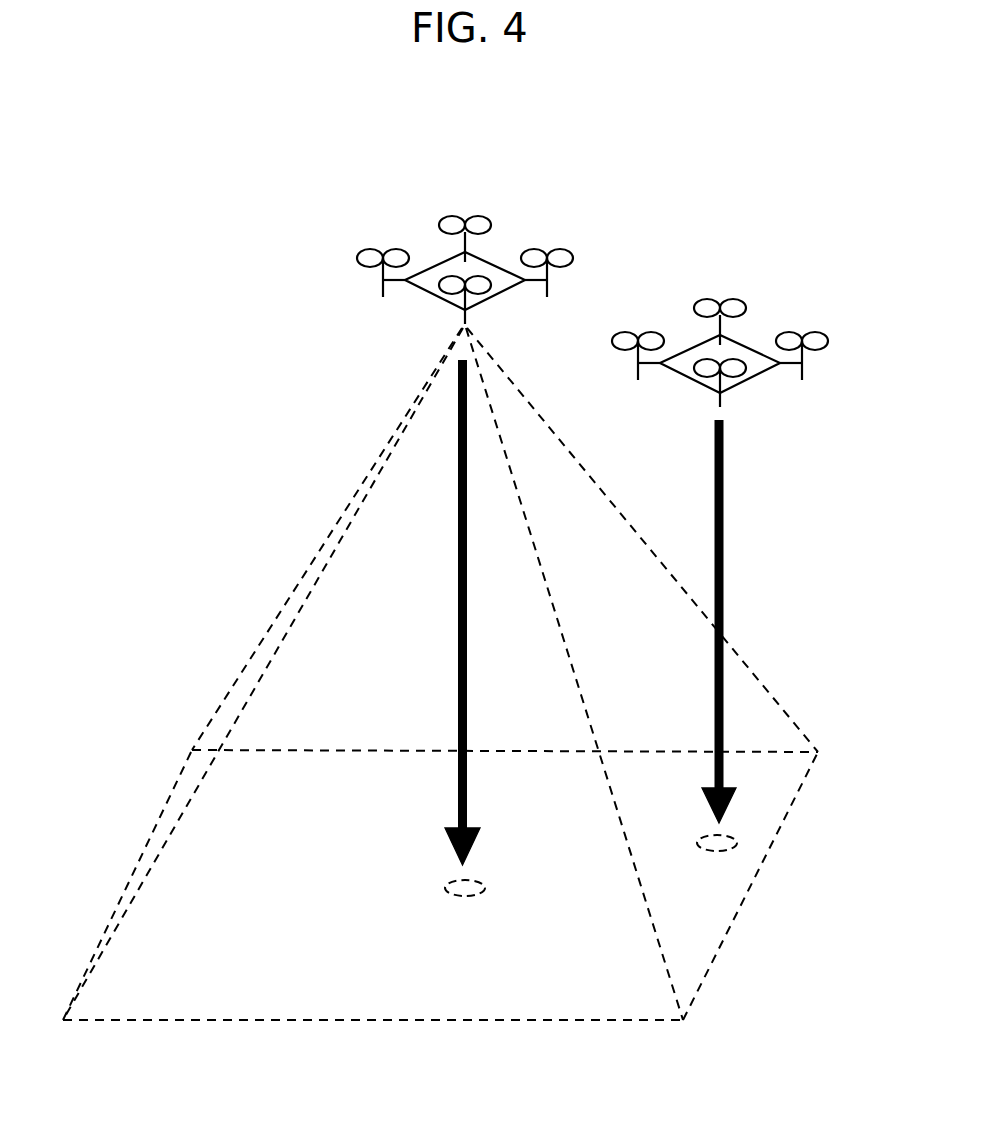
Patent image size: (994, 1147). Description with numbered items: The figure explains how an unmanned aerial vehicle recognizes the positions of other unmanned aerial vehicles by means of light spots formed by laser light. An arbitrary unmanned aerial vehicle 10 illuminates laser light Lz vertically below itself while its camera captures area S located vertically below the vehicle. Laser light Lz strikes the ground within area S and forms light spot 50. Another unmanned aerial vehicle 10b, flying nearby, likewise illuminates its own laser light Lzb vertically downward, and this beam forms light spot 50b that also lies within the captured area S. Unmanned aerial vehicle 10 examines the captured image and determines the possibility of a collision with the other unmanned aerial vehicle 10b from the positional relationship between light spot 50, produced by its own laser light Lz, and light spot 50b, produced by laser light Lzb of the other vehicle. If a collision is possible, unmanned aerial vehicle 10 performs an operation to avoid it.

The unmanned aerial vehicle 10 is at (507, 243).
The another unmanned aerial vehicle 10b is at (760, 328).
The laser light Lz is at (458, 600).
The laser light Lzb is at (725, 555).
The light spot 50 is at (478, 895).
The light spot 50b is at (738, 840).
The area S is at (492, 1022).